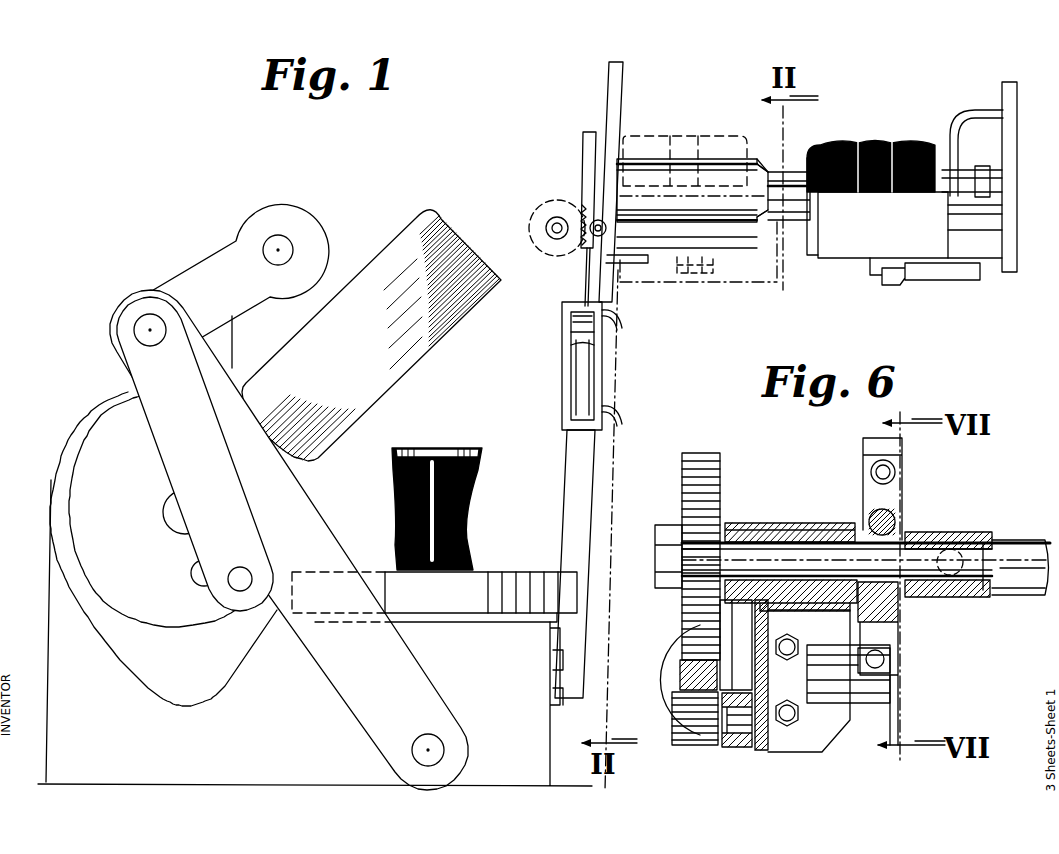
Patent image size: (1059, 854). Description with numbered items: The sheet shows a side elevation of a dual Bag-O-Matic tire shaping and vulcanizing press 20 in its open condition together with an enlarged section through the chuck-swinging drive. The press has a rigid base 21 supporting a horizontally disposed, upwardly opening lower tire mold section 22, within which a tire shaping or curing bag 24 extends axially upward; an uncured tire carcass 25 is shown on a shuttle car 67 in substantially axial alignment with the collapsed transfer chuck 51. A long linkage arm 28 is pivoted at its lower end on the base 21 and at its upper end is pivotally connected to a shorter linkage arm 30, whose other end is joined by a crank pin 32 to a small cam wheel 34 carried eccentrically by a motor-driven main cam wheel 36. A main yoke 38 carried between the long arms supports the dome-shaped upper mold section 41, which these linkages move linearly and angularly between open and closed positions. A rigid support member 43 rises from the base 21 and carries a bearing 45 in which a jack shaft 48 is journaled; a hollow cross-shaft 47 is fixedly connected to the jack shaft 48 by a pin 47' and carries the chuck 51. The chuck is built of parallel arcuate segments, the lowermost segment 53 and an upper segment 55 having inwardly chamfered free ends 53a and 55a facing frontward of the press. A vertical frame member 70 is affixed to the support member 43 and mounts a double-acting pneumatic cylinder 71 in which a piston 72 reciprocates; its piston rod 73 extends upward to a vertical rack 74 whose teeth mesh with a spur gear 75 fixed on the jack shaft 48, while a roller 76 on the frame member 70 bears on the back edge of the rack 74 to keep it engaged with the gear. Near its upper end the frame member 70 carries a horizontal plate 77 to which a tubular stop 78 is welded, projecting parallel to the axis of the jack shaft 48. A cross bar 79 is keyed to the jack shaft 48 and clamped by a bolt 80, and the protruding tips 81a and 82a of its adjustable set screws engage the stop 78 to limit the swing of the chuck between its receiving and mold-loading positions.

In FIG. 1, the tire shaping and vulcanizing press 20 is at (95, 345).
In FIG. 1, the base 21 is at (60, 596).
In FIG. 1, the tire mold section 22 is at (488, 616).
In FIG. 1, the tire shaping or curing bag 24 is at (472, 520).
In FIG. 1, the uncured tire band or carcass 25 is at (640, 150).
In FIG. 1, the long linkage arm 28 is at (335, 680).
In FIG. 1, the shorter linkage arm 30 is at (170, 448).
In FIG. 1, the crank pin 32 is at (245, 592).
In FIG. 1, the small cam wheel 34 is at (200, 578).
In FIG. 1, the main cam wheel 36 is at (105, 432).
In FIG. 1, the main yoke 38 is at (210, 268).
In FIG. 1, the upper mold section 41 is at (432, 333).
In FIG. 1, the support member 43 is at (585, 462).
In FIG. 6, the bearing 45 is at (738, 530).
In FIG. 6, the cross-shaft 47 is at (1022, 547).
In FIG. 6, the pin 47' is at (953, 548).
In FIG. 1, the jack shaft 48 is at (555, 223).
In FIG. 6, the jack shaft 48 is at (793, 548).
In FIG. 1, the transfer chuck 51 is at (767, 154).
In FIG. 1, the arcuate segment 53 is at (675, 222).
In FIG. 1, the front or free end of segment 53a is at (770, 220).
In FIG. 1, the arcuate segment 55 is at (690, 158).
In FIG. 1, the front or free end of segment 55a is at (773, 173).
In FIG. 1, the shuttle car 67 is at (727, 252).
In FIG. 1, the frame member 70 is at (597, 388).
In FIG. 6, the frame member 70 is at (762, 612).
In FIG. 1, the pneumatic cylinder 71 is at (580, 372).
In FIG. 6, the pneumatic cylinder 71 is at (690, 690).
In FIG. 1, the piston 72 is at (580, 333).
In FIG. 1, the piston rod 73 is at (585, 275).
In FIG. 1, the rack 74 is at (590, 160).
In FIG. 6, the rack 74 is at (680, 672).
In FIG. 1, the pinion or spur gear 75 is at (540, 240).
In FIG. 6, the pinion or spur gear 75 is at (702, 460).
In FIG. 1, the roller 76 is at (596, 218).
In FIG. 6, the roller 76 is at (695, 742).
In FIG. 6, the horizontal plate 77 is at (790, 745).
In FIG. 6, the tubular stop or abutment member 78 is at (855, 700).
In FIG. 6, the cross bar 79 is at (895, 497).
In FIG. 6, the bolt 80 is at (895, 520).
In FIG. 6, the tip of set screw 81a is at (872, 474).
In FIG. 6, the tip of set screw 82a is at (884, 661).